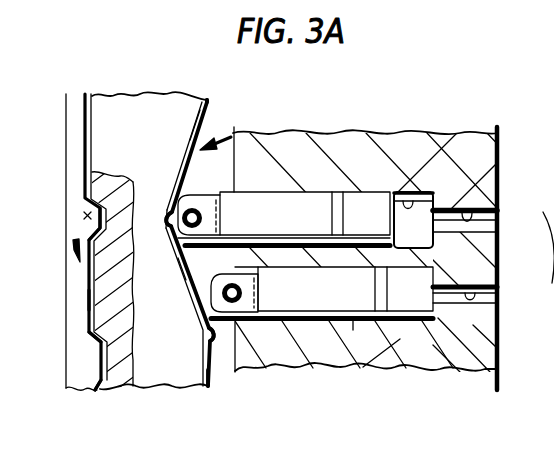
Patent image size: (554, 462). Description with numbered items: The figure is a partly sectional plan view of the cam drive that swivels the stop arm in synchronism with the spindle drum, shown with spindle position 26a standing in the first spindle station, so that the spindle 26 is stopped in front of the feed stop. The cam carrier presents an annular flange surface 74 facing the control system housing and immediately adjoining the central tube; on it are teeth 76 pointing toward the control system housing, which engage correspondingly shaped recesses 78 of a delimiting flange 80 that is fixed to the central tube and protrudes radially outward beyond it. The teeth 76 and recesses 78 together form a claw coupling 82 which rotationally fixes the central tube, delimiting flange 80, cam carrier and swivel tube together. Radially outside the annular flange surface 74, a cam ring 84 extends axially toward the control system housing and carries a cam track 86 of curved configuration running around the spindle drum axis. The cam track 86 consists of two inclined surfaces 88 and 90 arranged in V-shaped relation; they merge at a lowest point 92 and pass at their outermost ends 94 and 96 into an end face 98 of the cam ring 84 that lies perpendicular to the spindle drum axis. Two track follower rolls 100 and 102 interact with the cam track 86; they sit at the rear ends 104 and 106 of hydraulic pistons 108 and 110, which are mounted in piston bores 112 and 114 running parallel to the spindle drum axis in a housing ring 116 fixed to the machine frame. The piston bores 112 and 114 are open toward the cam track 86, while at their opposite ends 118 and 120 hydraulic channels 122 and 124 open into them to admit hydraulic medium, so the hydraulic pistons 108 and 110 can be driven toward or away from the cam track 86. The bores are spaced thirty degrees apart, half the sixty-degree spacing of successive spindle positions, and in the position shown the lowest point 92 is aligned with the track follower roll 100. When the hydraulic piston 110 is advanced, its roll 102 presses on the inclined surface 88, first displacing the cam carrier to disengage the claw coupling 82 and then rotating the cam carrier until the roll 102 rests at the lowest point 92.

The annular flange surface 74 is at (93, 297).
The teeth 76 is at (100, 380).
The recesses 78 is at (102, 352).
The delimiting flange 80 is at (118, 193).
The claw coupling 82 is at (68, 238).
The cam ring 84 is at (175, 100).
The cam track 86 is at (262, 134).
The inclined surface 88 is at (194, 171).
The inclined surface 90 is at (184, 286).
The lowest point 92 is at (170, 226).
The outermost end 94 is at (212, 109).
The outermost end 96 is at (204, 340).
The end face 98 is at (213, 373).
The track follower roll 100 is at (170, 214).
The track follower roll 102 is at (202, 309).
The rear end 104 is at (244, 165).
The rear end 106 is at (270, 354).
The hydraulic piston 108 is at (310, 208).
The hydraulic piston 110 is at (353, 330).
The piston bore 112 is at (405, 200).
The piston bore 114 is at (410, 309).
The housing ring 116 is at (466, 210).
The opposite end 118 is at (444, 192).
The opposite end 120 is at (440, 330).
The hydraulic channel 122 is at (503, 158).
The hydraulic channel 124 is at (472, 300).
The spindle position 26a is at (534, 235).
The spindle 26 is at (546, 375).